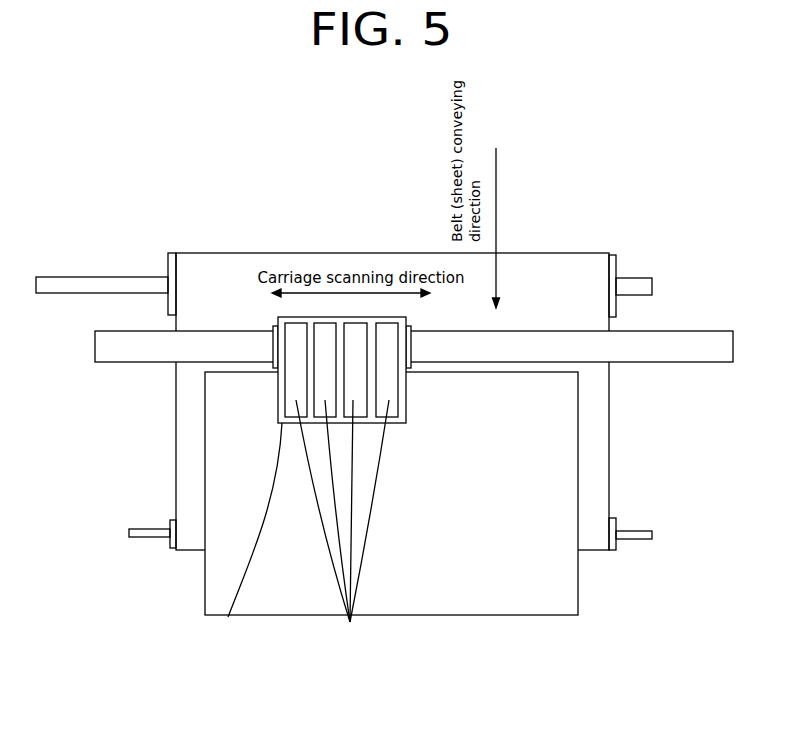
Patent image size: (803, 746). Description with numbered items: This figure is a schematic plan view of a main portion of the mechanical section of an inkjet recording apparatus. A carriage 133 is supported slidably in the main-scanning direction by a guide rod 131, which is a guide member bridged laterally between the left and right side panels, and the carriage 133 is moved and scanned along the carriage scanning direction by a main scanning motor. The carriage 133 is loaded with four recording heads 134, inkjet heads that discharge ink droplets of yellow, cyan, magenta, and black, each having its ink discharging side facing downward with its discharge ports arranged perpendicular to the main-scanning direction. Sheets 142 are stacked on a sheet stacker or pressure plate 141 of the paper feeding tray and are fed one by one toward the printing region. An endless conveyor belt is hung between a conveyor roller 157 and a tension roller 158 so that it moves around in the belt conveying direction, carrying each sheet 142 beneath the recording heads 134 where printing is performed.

The guide rod 131 is at (668, 343).
The carriage 133 is at (228, 618).
The recording heads 134 is at (350, 622).
The sheet stacker (pressure plate) 141 is at (222, 270).
The sheet 142 is at (527, 596).
The conveyor roller 157 is at (173, 253).
The tension roller 158 is at (173, 549).